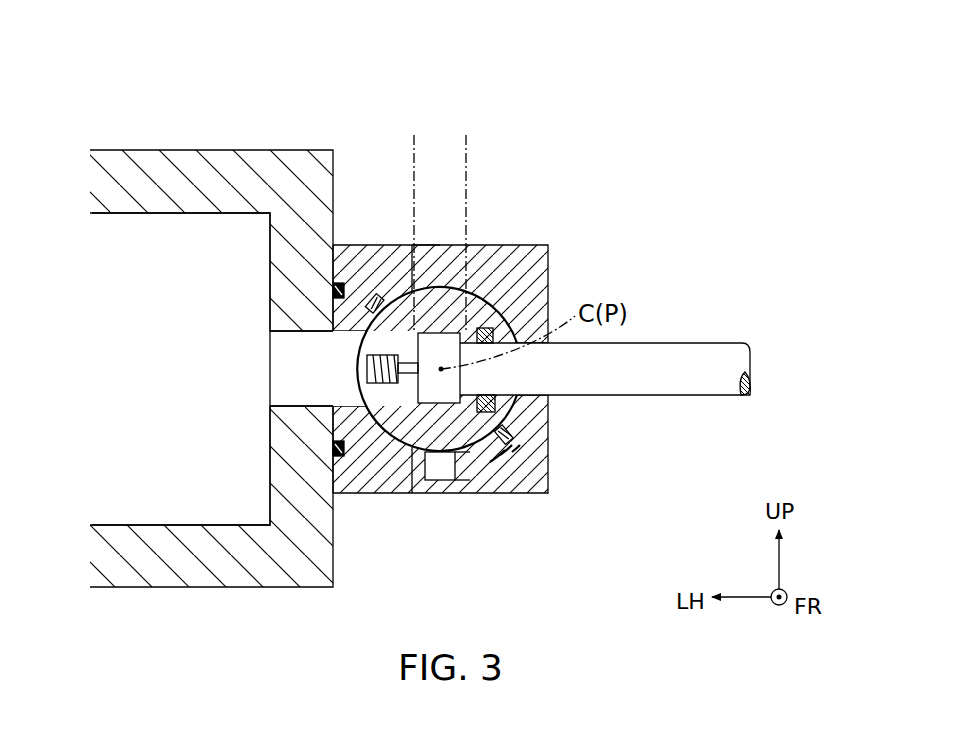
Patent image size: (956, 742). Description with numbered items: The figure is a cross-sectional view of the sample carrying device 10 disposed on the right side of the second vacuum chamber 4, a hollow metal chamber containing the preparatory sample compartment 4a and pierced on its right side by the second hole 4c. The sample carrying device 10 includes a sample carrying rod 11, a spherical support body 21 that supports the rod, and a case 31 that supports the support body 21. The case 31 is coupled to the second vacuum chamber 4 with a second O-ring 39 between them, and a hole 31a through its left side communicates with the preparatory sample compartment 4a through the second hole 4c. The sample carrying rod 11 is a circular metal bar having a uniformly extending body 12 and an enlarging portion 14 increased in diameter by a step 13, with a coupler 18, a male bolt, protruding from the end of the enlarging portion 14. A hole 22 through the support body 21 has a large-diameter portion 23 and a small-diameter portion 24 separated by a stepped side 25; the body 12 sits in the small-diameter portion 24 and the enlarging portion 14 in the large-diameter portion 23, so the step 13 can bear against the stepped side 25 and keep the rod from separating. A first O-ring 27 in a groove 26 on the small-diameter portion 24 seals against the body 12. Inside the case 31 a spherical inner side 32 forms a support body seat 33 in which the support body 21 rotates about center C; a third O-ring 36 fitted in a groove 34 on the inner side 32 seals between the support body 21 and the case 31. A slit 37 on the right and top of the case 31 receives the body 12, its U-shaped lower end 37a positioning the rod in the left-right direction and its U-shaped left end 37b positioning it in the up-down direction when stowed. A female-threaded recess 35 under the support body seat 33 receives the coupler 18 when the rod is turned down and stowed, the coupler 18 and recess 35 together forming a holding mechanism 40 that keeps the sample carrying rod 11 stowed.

The second vacuum chamber 4 is at (218, 167).
The preparatory sample compartment 4a is at (152, 216).
The second hole 4c is at (272, 333).
The sample carrying device 10 is at (590, 205).
The sample carrying rod 11 is at (609, 253).
The body 12 is at (662, 343).
The step 13 is at (546, 281).
The enlarging portion 14 is at (442, 342).
The coupler 18 is at (352, 262).
The support body 21 is at (493, 328).
The hole 22 is at (566, 474).
The large-diameter portion 23 is at (415, 465).
The small-diameter portion 24 is at (510, 395).
The stepped side 25 is at (508, 480).
The groove 26 is at (512, 445).
The first O-ring 27 is at (508, 436).
The case 31 is at (375, 362).
The hole 31a is at (342, 400).
The spherical inner side 32 is at (412, 482).
The support body seat 33 is at (383, 432).
The groove 34 is at (533, 453).
The recess 35 is at (452, 483).
The third O-ring 36 is at (520, 450).
The slit 37 is at (540, 258).
The lower end 37a is at (538, 395).
The left end 37b is at (418, 262).
The second O-ring 39 is at (333, 447).
The holding mechanism 40 is at (440, 337).